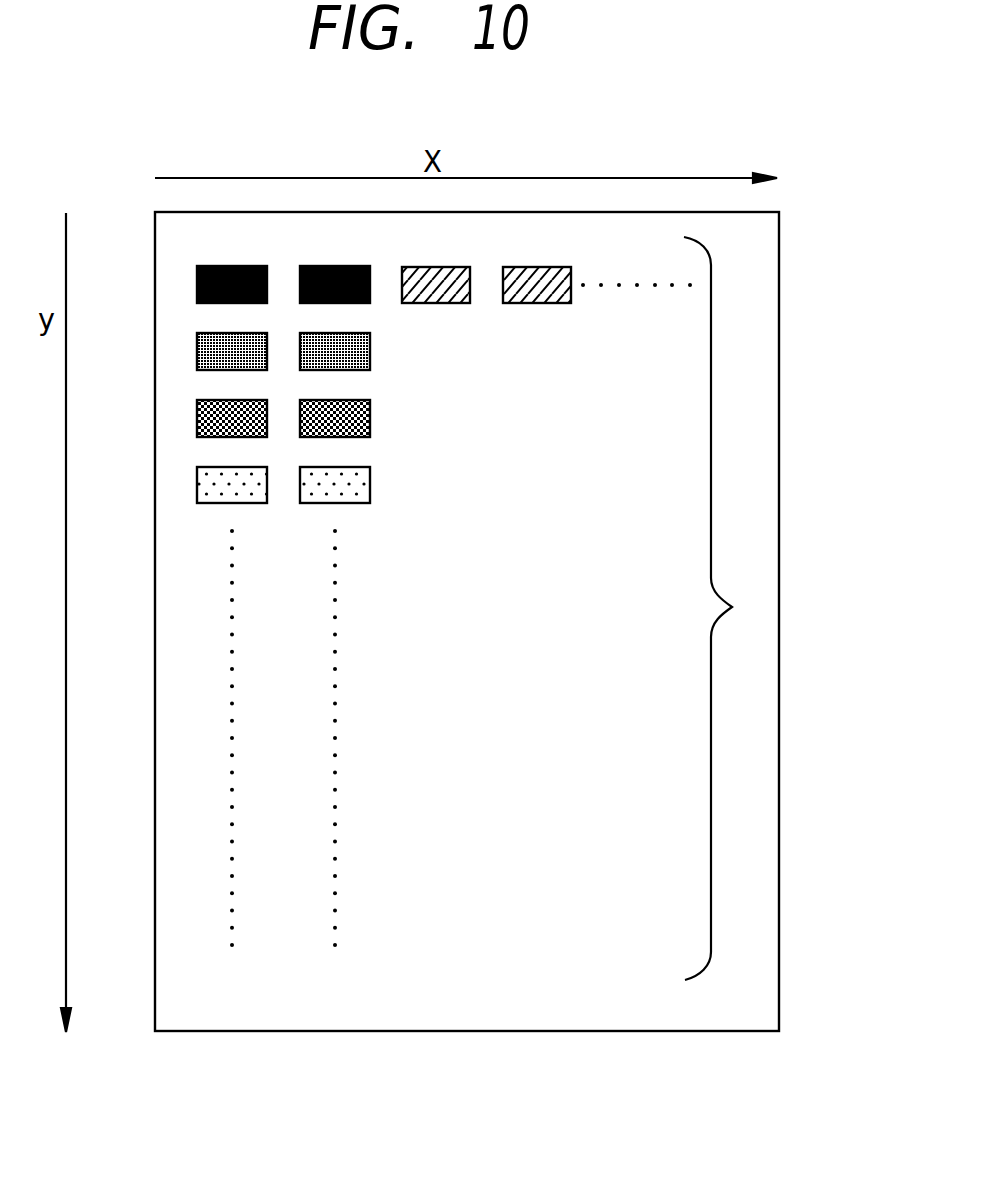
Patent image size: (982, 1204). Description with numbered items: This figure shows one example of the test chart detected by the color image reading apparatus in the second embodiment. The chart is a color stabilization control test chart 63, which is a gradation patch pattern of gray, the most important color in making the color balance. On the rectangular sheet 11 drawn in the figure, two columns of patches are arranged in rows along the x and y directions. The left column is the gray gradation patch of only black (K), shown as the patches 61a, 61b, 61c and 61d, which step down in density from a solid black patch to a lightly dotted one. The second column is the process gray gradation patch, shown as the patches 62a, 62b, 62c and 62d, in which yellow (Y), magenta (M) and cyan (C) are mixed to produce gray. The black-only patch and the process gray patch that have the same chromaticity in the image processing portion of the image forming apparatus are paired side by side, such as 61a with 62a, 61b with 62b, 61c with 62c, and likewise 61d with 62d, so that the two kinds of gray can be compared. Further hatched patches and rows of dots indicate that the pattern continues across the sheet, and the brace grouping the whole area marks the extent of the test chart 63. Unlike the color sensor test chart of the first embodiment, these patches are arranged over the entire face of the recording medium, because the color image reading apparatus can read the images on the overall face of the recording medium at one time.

The substrate 11 is at (716, 385).
The gray gradation patch of only black 61a is at (203, 266).
The gray gradation patch of only black 61b is at (203, 333).
The gray gradation patch of only black 61c is at (203, 400).
The gray gradation patch of only black 61d is at (203, 467).
The process gray gradation patch 62a is at (366, 265).
The process gray gradation patch 62b is at (366, 331).
The process gray gradation patch 62c is at (366, 398).
The process gray gradation patch 62d is at (366, 465).
The color stabilization control test chart 63 is at (727, 608).